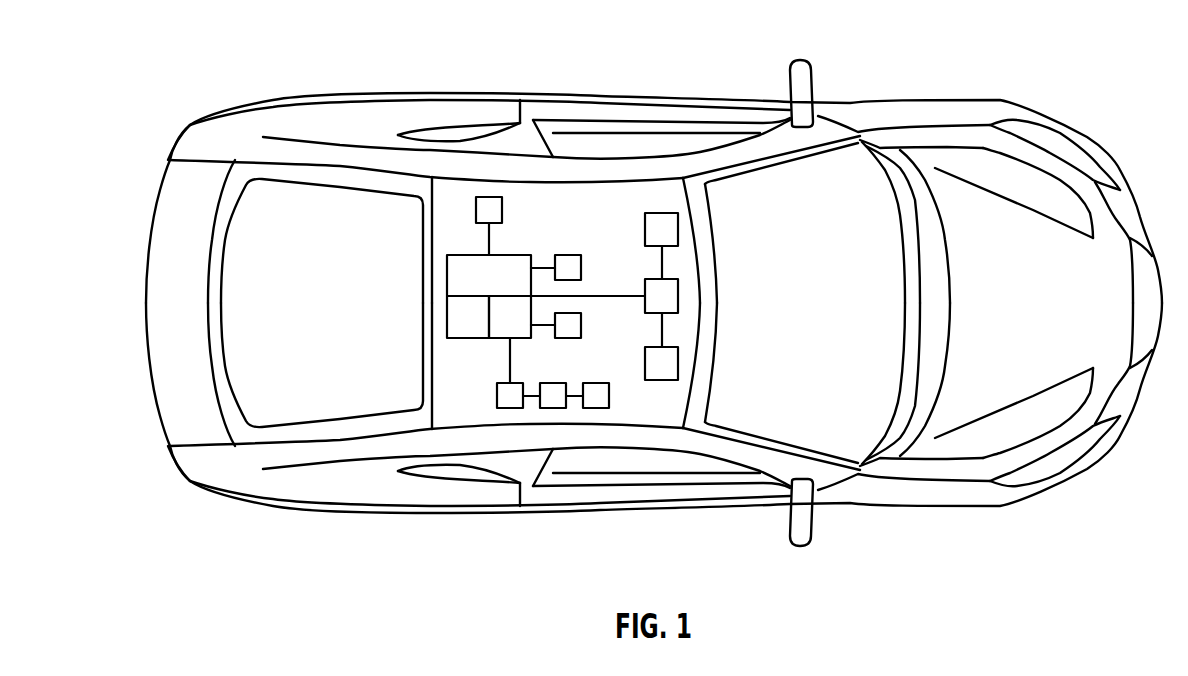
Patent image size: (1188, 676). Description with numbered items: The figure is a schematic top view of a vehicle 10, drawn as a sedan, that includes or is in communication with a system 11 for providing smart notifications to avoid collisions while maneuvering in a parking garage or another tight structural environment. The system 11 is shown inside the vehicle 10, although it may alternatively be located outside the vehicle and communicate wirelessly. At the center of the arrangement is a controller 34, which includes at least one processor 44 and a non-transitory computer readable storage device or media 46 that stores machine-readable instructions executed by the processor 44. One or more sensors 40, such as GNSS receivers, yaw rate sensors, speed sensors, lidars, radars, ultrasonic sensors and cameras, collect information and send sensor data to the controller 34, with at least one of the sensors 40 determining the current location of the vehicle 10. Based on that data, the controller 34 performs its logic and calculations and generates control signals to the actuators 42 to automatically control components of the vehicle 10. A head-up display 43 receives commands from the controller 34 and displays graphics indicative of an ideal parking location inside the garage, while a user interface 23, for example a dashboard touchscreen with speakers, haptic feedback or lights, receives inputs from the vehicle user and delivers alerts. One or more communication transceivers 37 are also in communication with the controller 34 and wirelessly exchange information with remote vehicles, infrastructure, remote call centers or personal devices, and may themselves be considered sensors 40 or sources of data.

The vehicle 10 is at (922, 110).
The system 11 is at (557, 226).
The user interface 23 is at (581, 318).
The controller 34 is at (470, 253).
The communication transceivers 37 is at (489, 197).
The sensors 40 is at (678, 230).
The actuators 42 is at (510, 408).
The head-up display 43 is at (572, 253).
The processor 44 is at (468, 338).
The non-transitory computer readable storage device or media 46 is at (498, 338).